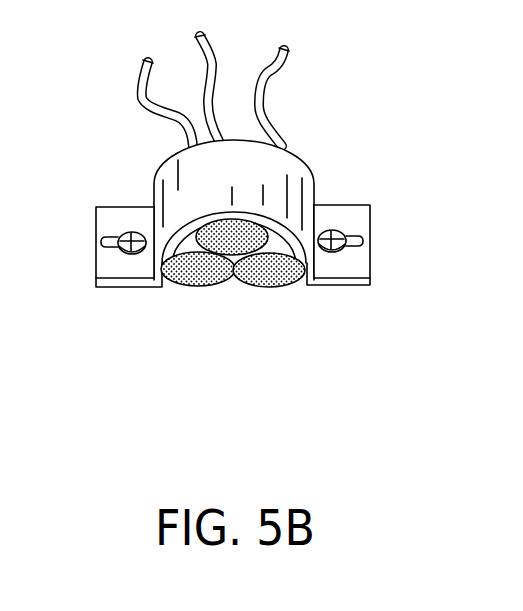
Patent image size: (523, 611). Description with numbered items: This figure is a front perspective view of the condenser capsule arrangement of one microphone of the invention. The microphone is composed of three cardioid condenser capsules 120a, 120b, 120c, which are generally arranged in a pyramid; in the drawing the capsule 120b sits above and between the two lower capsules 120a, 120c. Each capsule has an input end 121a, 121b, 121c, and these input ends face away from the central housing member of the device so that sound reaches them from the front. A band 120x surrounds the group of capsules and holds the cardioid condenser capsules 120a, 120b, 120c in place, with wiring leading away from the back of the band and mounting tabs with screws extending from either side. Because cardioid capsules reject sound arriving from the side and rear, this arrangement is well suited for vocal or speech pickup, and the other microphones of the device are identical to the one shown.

The band 120x is at (290, 168).
The cardioid condenser capsule 120a is at (176, 285).
The cardioid condenser capsule 120b is at (210, 227).
The cardioid condenser capsule 120c is at (292, 284).
The input end 121a is at (205, 282).
The input end 121b is at (230, 226).
The input end 121c is at (269, 281).